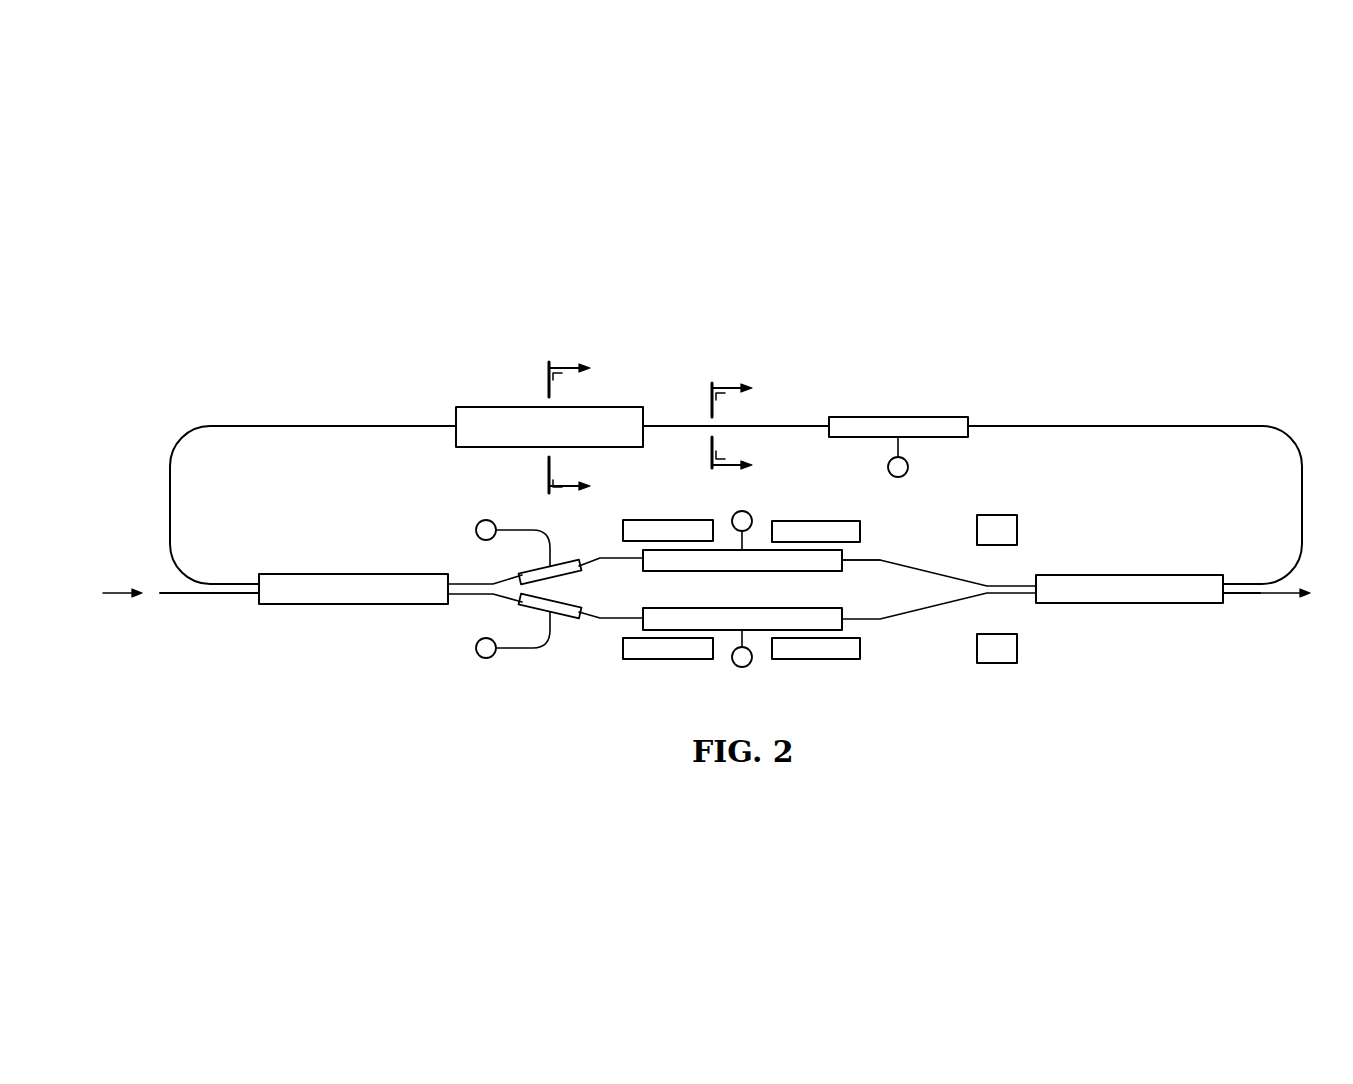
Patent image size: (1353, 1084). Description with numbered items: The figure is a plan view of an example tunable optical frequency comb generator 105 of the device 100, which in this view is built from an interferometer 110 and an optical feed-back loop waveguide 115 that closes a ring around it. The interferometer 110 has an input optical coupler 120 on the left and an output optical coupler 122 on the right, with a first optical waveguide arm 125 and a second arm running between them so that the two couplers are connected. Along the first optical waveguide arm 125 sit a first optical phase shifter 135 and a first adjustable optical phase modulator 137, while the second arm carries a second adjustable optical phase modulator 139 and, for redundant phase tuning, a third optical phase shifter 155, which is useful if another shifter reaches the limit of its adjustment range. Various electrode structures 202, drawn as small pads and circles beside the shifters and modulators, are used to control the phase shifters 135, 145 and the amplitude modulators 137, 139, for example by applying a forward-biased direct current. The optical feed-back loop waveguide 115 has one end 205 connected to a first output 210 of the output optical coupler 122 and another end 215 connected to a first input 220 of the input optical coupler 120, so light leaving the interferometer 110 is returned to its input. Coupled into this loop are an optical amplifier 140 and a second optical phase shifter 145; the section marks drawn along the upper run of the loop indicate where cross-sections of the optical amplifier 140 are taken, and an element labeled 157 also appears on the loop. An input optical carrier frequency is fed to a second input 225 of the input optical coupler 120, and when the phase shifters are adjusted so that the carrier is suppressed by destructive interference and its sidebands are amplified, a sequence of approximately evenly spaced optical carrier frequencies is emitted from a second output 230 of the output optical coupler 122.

The device 100 is at (1098, 270).
The tunable optical frequency comb generator 105 is at (257, 412).
The interferometer 110 is at (444, 522).
The optical feed-back loop waveguide 115 is at (1115, 426).
The input optical coupler 120 is at (350, 604).
The output optical coupler 122 is at (1130, 603).
The first optical waveguide arm 125 is at (937, 608).
The first optical phase shifter 135 is at (571, 565).
The first adjustable optical phase modulator 137 is at (842, 553).
The second adjustable optical phase modulator 139 is at (842, 627).
The optical amplifier 140 is at (656, 372).
The second optical phase shifter 145 is at (908, 417).
The third optical phase shifter 155 is at (569, 616).
The phase shifter 157 is at (487, 407).
The electrode structures 202 is at (660, 520).
The one end of the feed-back loop waveguide 205 is at (1302, 498).
The first output 210 is at (1250, 584).
The another end of the feed-back loop waveguide 215 is at (170, 500).
The first input 220 is at (228, 584).
The second input 225 is at (226, 595).
The second output 230 is at (1255, 594).